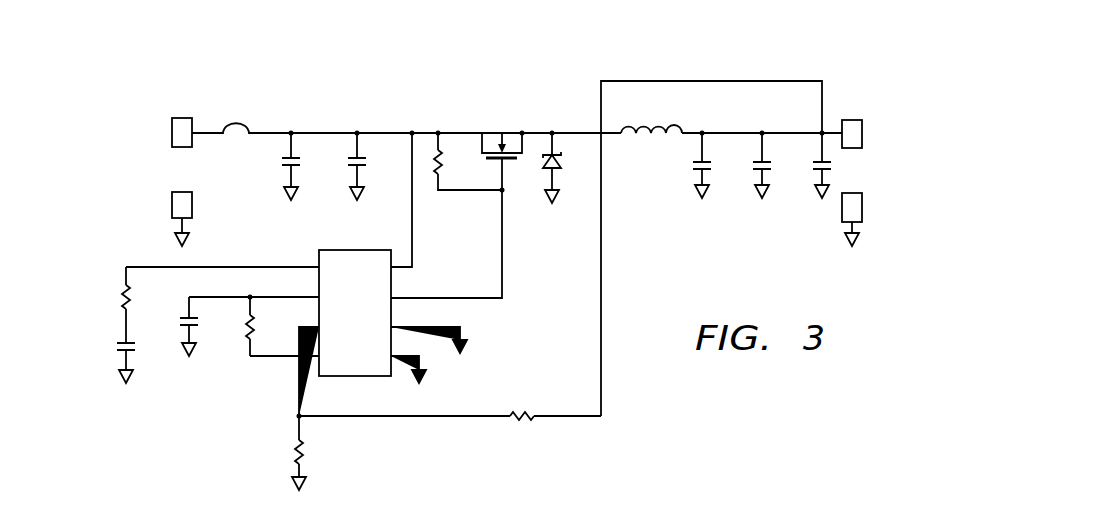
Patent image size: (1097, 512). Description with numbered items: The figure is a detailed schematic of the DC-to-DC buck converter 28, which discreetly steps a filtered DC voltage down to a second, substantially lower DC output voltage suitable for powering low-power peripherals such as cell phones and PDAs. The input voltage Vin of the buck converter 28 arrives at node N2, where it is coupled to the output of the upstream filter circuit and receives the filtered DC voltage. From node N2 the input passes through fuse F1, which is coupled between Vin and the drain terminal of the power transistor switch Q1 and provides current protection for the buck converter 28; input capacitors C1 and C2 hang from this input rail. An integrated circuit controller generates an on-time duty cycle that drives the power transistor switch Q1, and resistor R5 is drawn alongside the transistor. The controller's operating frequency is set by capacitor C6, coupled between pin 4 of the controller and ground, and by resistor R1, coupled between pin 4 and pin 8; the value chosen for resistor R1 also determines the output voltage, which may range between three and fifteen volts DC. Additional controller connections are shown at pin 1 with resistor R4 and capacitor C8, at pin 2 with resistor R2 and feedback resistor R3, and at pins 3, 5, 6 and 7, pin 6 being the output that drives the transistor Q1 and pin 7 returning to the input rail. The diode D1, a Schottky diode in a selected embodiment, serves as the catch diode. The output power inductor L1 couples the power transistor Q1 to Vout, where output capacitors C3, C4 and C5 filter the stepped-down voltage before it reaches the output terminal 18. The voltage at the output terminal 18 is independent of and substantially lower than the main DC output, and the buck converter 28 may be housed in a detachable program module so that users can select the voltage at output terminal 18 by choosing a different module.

The DC-to-DC buck converter 28 is at (401, 91).
The output terminal 18 is at (851, 119).
The node N2 is at (182, 123).
The fuse F1 is at (241, 143).
The capacitor C1 is at (303, 166).
The capacitor C2 is at (369, 166).
The capacitor C3 is at (688, 165).
The capacitor C4 is at (748, 165).
The capacitor C5 is at (808, 165).
The capacitor C6 is at (200, 326).
The capacitor C8 is at (136, 361).
The resistor R1 is at (261, 326).
The resistor R2 is at (309, 452).
The resistor R3 is at (450, 404).
The resistor R4 is at (137, 305).
The resistor R5 is at (469, 162).
The power transistor switch Q1 is at (503, 150).
The diode D1 is at (563, 167).
The inductor L1 is at (651, 115).
The pin 1 is at (231, 267).
The pin 2 is at (318, 366).
The pin 3 is at (421, 335).
The pin 4 is at (263, 298).
The pin 5 is at (400, 364).
The pin 6 is at (438, 298).
The pin 7 is at (393, 267).
The pin 8 is at (293, 356).